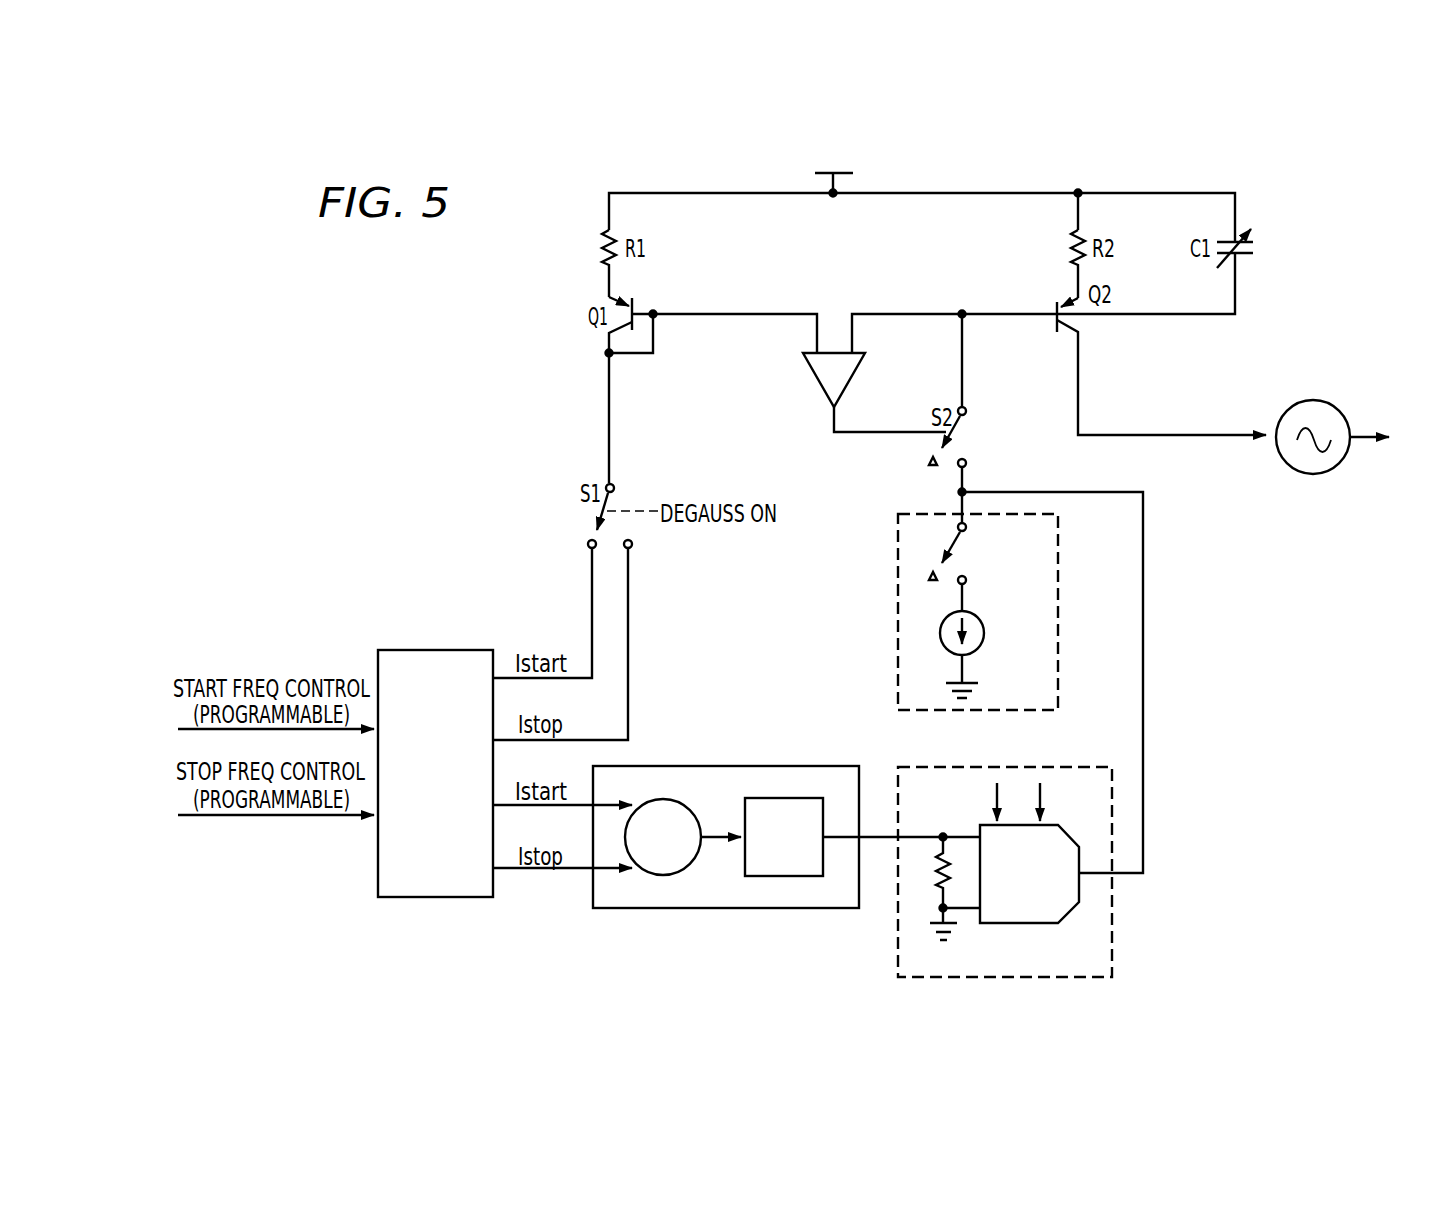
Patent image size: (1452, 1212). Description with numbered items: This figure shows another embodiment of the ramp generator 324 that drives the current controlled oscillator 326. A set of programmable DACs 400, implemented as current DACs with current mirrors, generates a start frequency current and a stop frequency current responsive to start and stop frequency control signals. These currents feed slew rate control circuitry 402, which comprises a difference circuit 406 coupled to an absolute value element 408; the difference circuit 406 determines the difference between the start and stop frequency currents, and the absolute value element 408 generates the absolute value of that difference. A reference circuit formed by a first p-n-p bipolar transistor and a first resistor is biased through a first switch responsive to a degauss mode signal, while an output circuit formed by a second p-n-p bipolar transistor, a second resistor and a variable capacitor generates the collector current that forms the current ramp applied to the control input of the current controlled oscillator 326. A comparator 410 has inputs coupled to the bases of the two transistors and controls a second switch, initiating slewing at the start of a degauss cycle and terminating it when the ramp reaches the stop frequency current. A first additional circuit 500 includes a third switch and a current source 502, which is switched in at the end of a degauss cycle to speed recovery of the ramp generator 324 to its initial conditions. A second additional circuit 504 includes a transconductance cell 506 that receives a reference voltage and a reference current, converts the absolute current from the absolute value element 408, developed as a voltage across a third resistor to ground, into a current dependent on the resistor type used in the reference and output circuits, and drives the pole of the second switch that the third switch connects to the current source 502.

The ramp generator 324 is at (432, 294).
The current controlled oscillator 326 is at (1313, 475).
The set of programmable digital to analog converters 400 is at (413, 650).
The slew rate control circuitry 402 is at (726, 818).
The difference circuit 406 is at (683, 798).
The absolute value element 408 is at (782, 798).
The comparator 410 is at (853, 372).
The first additional circuit 500 is at (942, 612).
The current source 502 is at (980, 620).
The second additional circuit 504 is at (1044, 872).
The transconductance cell 506 is at (1034, 923).